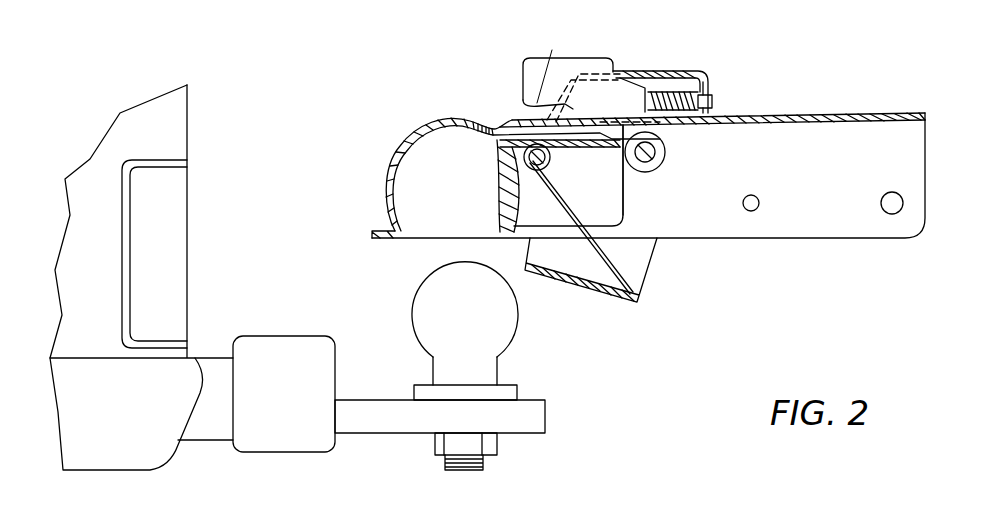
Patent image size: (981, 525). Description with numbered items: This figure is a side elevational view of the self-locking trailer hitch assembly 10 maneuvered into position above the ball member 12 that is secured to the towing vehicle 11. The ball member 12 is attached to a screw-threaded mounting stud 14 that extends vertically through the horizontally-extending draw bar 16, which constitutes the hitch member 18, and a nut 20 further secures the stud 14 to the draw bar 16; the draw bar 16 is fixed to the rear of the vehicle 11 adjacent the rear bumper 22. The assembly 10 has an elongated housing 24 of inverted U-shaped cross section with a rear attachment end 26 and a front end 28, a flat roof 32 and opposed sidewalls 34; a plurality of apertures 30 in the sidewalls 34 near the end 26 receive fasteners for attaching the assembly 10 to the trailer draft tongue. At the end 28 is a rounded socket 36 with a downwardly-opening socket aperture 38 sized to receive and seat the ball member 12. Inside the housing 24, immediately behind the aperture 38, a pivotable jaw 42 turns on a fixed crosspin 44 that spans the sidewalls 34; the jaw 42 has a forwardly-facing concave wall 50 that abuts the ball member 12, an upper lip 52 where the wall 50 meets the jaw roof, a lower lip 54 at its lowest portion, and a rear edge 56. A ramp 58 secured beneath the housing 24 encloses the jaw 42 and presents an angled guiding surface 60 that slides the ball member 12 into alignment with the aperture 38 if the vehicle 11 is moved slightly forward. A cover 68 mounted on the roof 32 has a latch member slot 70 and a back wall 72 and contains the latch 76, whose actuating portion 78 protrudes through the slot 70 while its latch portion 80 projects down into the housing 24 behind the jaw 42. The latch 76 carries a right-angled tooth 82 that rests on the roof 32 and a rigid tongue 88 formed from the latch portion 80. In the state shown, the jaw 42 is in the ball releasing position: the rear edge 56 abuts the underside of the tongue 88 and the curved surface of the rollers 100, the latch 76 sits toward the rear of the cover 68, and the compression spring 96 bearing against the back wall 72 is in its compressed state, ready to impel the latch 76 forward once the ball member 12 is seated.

The self-locking trailer hitch assembly 10 is at (829, 48).
The towing vehicle 11 is at (188, 132).
The ball member 12 is at (520, 320).
The mounting shank or stud 14 is at (485, 463).
The draw bar 16 is at (372, 400).
The hitch member 18 is at (396, 454).
The nut 20 is at (434, 450).
The rear bumper 22 is at (265, 336).
The body member or housing 24 is at (720, 91).
The rear attachment end 26 is at (771, 212).
The front end 28 is at (495, 154).
The apertures 30 is at (757, 127).
The upper surface or roof 32 is at (895, 108).
The sidewalls 34 is at (797, 205).
The rounded socket 36 is at (386, 190).
The socket aperture 38 is at (420, 240).
The pivotable jaw 42 is at (625, 205).
The crosspin 44 is at (527, 162).
The concave-shaped wall 50 is at (503, 208).
The inner-projecting ridge or lip 52 is at (492, 147).
The lower projecting ridge or lip 54 is at (490, 238).
The rear edge 56 is at (622, 143).
The ramp 58 is at (655, 268).
The guiding surface 60 is at (548, 188).
The shroud or cover 68 is at (621, 100).
The latch member slot 70 is at (642, 72).
The back wall 72 is at (712, 96).
The latch 76 is at (598, 97).
The actuating portion 78 is at (508, 50).
The latch portion 80 is at (668, 140).
The tooth 82 is at (548, 63).
The rigid tongue 88 is at (494, 127).
The compression spring 96 is at (714, 90).
The rollers 100 is at (656, 170).